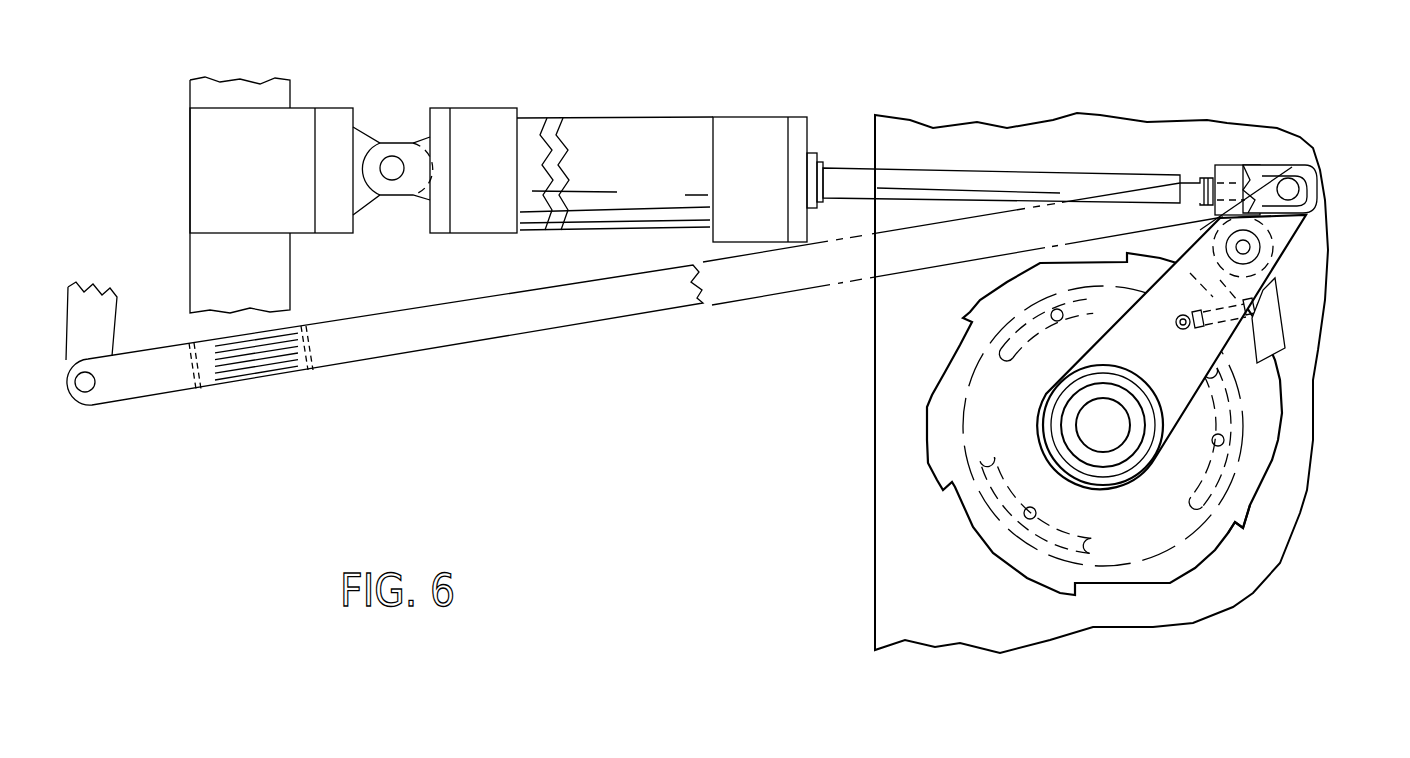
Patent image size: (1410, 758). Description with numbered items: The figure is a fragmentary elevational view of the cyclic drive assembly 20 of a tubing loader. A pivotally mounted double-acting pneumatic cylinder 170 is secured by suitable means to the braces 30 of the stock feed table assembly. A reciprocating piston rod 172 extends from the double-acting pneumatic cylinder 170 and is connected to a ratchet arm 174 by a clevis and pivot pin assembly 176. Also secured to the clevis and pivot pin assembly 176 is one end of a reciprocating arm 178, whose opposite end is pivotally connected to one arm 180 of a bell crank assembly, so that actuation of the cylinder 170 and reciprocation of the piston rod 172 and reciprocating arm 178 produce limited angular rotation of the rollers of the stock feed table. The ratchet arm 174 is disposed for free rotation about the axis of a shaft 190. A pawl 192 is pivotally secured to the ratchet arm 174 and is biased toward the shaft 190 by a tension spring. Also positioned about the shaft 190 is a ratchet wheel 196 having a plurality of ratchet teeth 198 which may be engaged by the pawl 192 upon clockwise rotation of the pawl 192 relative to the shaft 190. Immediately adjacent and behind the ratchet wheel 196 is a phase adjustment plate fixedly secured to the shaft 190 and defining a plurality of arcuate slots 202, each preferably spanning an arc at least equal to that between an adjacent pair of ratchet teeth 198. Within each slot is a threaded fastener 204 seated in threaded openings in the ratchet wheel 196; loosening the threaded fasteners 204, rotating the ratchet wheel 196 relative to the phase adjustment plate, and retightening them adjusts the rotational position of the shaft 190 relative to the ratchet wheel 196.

The cyclic drive assembly 20 is at (748, 626).
The braces 30 is at (240, 92).
The double-acting pneumatic cylinder 170 is at (648, 128).
The reciprocating piston rod 172 is at (393, 163).
The ratchet arm 174 is at (1277, 237).
The clevis and pivot pin assembly 176 is at (1313, 173).
The reciprocating arm 178 is at (367, 343).
The arm of bell crank assembly 180 is at (100, 307).
The shaft 190 is at (1092, 432).
The pawl 192 is at (1275, 342).
The ratchet wheel 196 is at (1220, 537).
The ratchet teeth 198 is at (1245, 530).
The arcuate slots 202 is at (1222, 478).
The threaded fastener 204 is at (1023, 512).